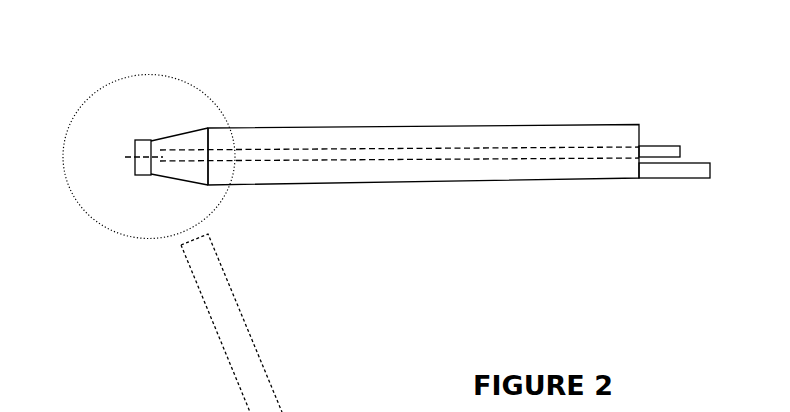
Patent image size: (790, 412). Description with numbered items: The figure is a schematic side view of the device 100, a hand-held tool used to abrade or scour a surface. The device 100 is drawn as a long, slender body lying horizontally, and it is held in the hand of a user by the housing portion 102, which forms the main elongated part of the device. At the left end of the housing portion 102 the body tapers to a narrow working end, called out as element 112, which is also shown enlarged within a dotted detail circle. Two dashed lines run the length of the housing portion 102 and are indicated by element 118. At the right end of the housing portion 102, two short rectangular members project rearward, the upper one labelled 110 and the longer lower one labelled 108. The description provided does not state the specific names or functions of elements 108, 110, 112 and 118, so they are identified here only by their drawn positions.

The device 100 is at (391, 57).
The housing portion 102 is at (432, 183).
The connector 108 is at (686, 178).
The connector 110 is at (655, 146).
The distal tip 112 is at (148, 124).
The lumen 118 is at (477, 148).